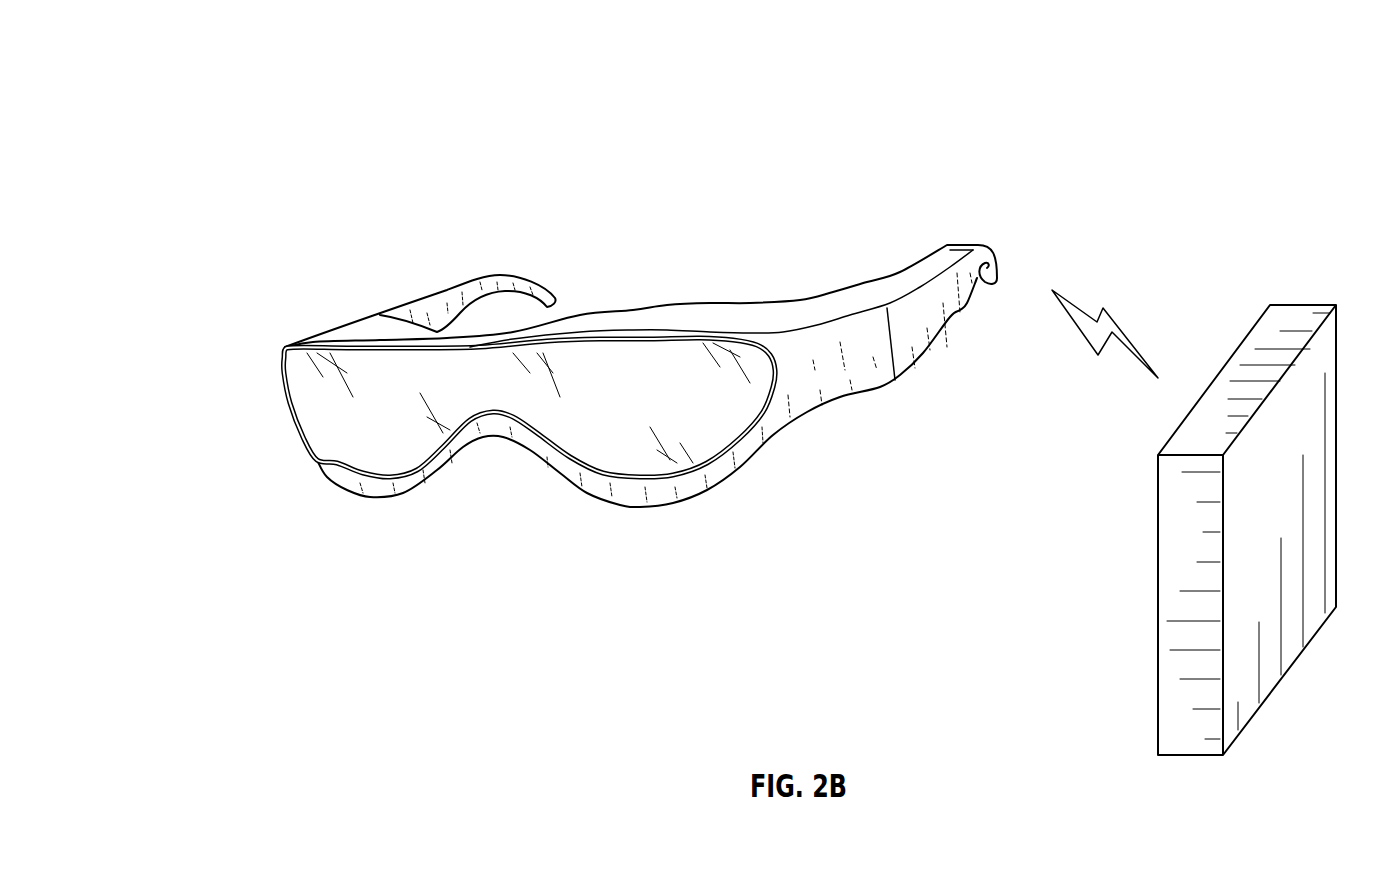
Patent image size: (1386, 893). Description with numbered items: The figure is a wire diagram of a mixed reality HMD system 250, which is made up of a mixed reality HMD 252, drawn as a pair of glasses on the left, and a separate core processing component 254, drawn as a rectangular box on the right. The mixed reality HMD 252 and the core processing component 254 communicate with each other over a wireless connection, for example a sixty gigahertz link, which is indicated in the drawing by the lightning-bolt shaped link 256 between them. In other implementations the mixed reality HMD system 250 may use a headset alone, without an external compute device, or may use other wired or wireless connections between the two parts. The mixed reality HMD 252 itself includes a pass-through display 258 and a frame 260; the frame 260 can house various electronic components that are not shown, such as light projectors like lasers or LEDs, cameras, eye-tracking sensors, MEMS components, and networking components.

The mixed reality HMD system 250 is at (253, 133).
The mixed reality HMD 252 is at (287, 345).
The core processing component 254 is at (1157, 603).
The link 256 is at (1107, 312).
The pass-through display 258 is at (743, 341).
The frame 260 is at (921, 315).